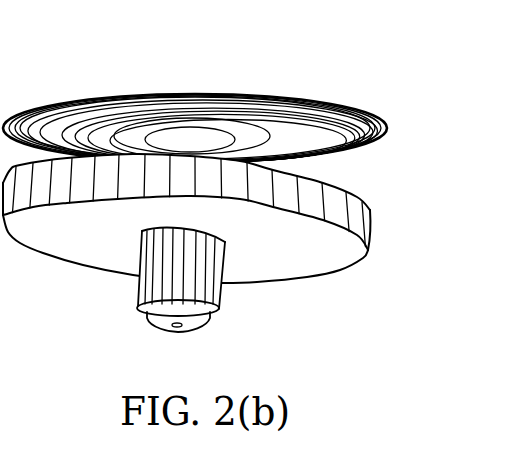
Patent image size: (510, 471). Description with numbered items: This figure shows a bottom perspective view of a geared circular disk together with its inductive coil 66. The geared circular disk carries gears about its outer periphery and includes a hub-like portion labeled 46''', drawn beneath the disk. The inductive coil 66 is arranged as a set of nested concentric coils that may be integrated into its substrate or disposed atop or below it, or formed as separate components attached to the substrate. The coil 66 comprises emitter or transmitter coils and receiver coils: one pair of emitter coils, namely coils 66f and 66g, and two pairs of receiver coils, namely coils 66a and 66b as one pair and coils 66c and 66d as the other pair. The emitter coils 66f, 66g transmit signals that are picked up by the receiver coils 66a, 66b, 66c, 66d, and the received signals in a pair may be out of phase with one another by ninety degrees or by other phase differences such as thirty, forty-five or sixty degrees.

The inductive coil 66 is at (181, 93).
The receiver coil 66a is at (245, 135).
The receiver coil 66b is at (125, 135).
The receiver coil 66c is at (327, 145).
The receiver coil 66d is at (55, 130).
The emitter coil 66f is at (285, 137).
The emitter coil 66g is at (353, 152).
The gear hub 46''' is at (224, 281).